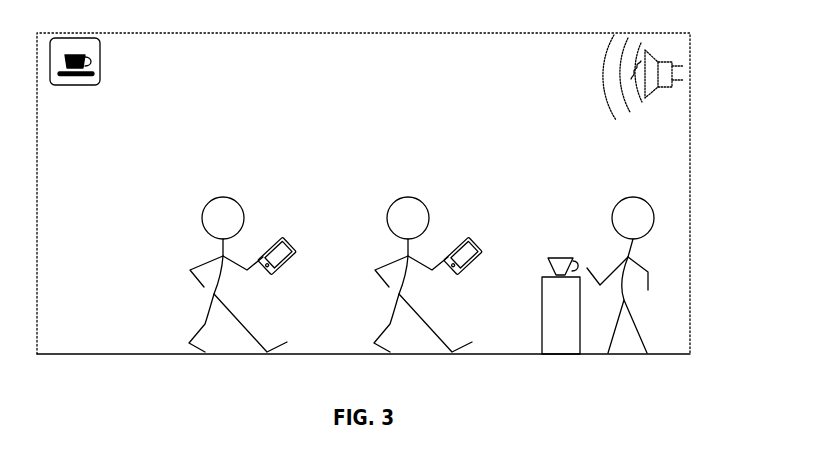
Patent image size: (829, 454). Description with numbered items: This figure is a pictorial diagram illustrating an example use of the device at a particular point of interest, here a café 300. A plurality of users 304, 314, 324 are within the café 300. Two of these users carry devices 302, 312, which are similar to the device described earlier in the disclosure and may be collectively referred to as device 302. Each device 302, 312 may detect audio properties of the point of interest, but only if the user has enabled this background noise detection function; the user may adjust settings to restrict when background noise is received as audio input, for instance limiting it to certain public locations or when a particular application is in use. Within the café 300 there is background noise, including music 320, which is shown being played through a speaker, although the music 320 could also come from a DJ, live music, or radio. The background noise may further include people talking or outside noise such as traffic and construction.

The café 300 is at (363, 193).
The device 302 is at (289, 236).
The user 304 is at (204, 314).
The device 312 is at (476, 236).
The user 314 is at (390, 314).
The music 320 is at (657, 44).
The user 324 is at (634, 325).